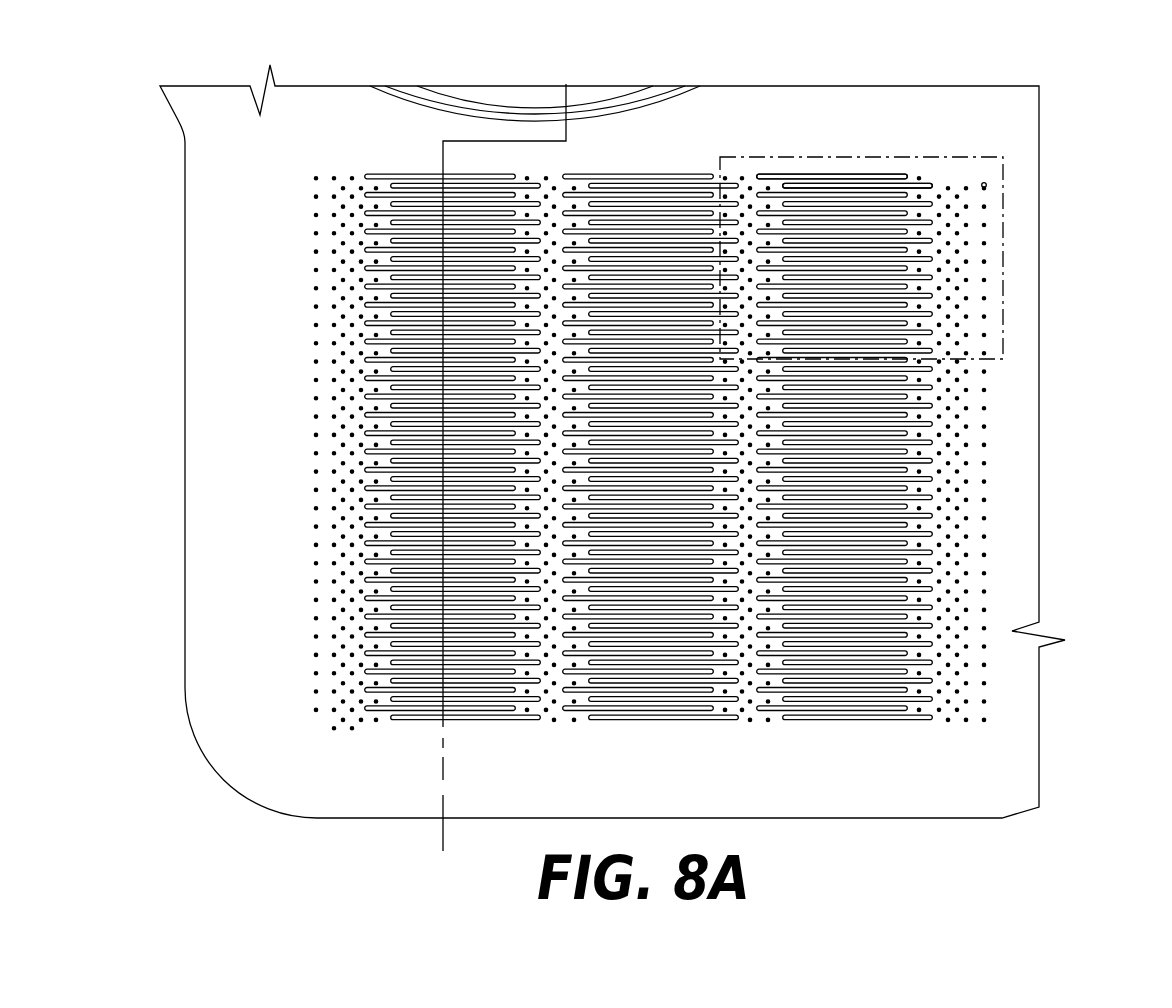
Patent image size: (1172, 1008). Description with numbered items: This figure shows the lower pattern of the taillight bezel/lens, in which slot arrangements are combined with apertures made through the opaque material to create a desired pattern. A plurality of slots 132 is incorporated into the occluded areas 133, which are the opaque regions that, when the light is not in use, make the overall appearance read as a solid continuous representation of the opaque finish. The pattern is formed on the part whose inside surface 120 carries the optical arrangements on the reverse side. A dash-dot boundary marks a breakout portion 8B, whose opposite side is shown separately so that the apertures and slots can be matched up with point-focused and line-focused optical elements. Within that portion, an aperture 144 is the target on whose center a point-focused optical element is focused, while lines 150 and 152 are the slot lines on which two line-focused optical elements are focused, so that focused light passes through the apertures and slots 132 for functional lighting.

The inside surface 120 is at (349, 176).
The slots 132 is at (424, 186).
The occluded areas 133 is at (680, 146).
The aperture 144 is at (984, 184).
The line 150 is at (836, 176).
The line 152 is at (866, 184).
The breakout portion 8B is at (760, 157).